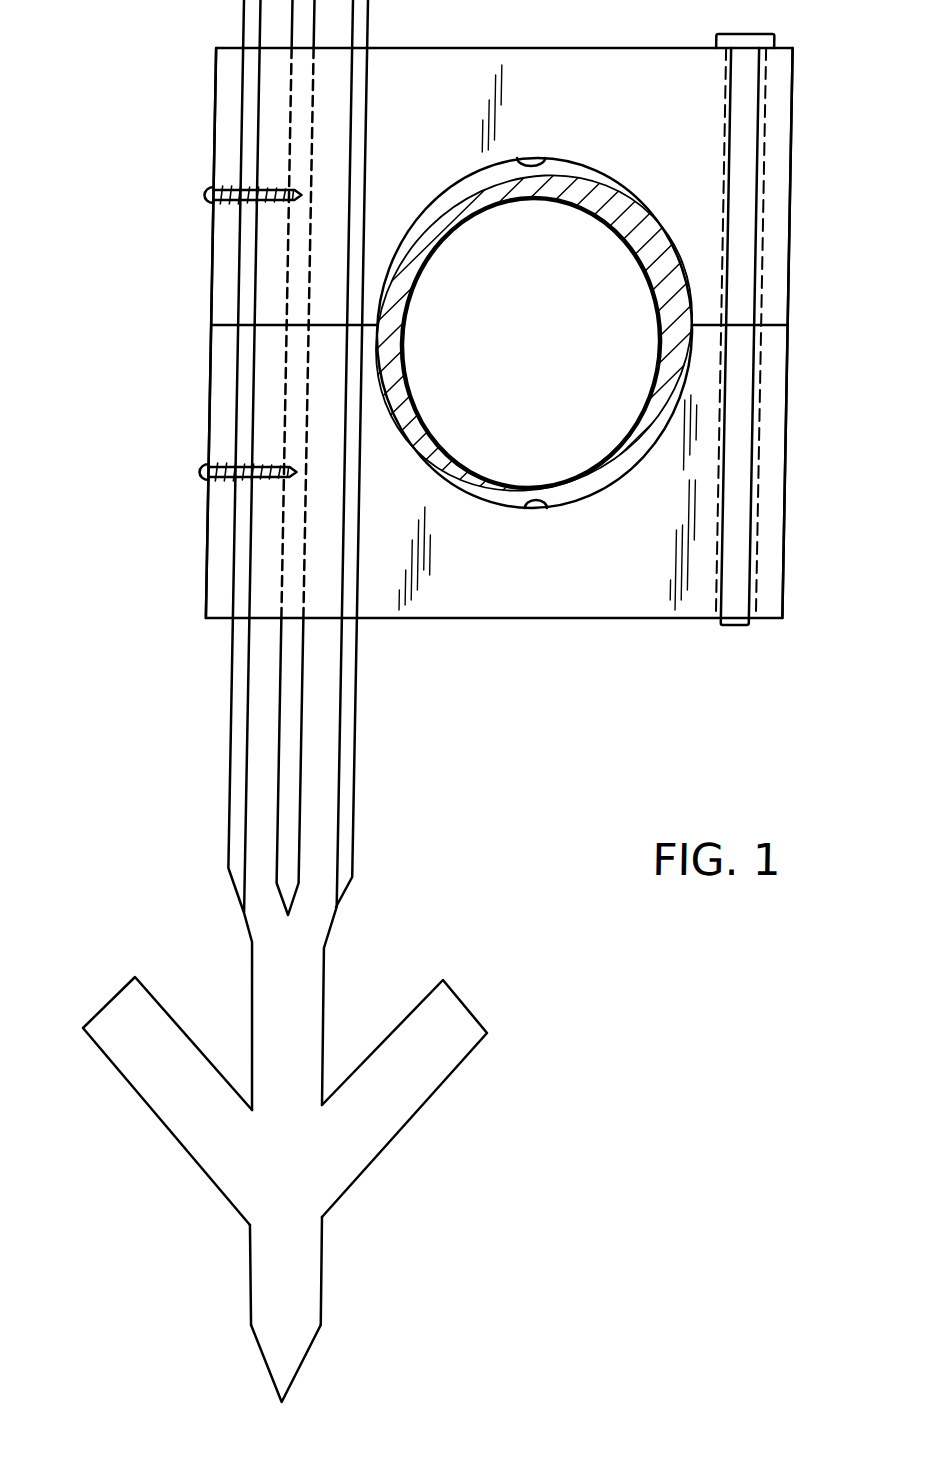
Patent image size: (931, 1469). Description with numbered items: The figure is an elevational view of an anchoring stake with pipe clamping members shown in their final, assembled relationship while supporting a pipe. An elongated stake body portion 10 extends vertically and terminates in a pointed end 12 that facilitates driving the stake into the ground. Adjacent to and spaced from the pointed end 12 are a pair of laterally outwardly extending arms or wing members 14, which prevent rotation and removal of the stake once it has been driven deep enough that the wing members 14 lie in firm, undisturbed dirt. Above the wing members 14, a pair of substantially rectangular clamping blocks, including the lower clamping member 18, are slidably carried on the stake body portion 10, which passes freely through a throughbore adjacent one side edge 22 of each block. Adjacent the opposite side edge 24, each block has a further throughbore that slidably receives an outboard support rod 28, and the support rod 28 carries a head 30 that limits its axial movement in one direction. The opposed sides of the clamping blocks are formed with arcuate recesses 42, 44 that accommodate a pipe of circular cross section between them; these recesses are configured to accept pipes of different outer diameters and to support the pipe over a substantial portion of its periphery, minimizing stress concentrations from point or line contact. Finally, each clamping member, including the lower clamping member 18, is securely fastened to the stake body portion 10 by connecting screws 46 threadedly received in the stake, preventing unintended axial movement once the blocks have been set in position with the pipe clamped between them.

The stake body portion 10 is at (320, 995).
The pointed end 12 is at (323, 1373).
The wing members 14 is at (178, 1105).
The lower clamping member 18 is at (618, 602).
The side edge 22 is at (217, 95).
The opposite side edge 24 is at (795, 180).
The outboard support rod 28 is at (751, 243).
The head 30 is at (754, 38).
The arcuate recess 42 is at (546, 157).
The arcuate recess 44 is at (556, 503).
The connecting screws 46 is at (208, 193).